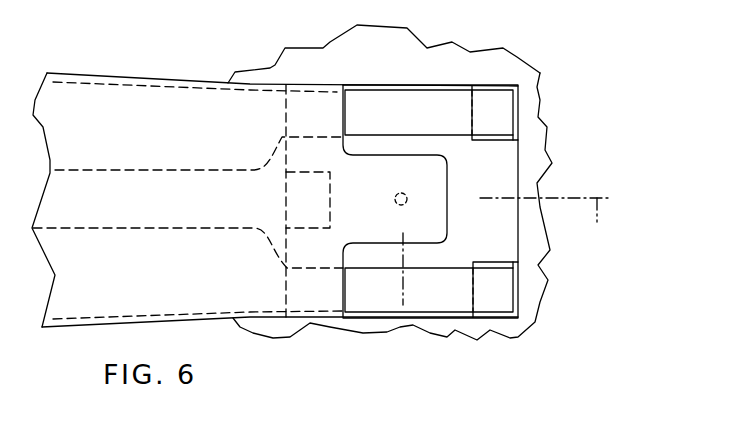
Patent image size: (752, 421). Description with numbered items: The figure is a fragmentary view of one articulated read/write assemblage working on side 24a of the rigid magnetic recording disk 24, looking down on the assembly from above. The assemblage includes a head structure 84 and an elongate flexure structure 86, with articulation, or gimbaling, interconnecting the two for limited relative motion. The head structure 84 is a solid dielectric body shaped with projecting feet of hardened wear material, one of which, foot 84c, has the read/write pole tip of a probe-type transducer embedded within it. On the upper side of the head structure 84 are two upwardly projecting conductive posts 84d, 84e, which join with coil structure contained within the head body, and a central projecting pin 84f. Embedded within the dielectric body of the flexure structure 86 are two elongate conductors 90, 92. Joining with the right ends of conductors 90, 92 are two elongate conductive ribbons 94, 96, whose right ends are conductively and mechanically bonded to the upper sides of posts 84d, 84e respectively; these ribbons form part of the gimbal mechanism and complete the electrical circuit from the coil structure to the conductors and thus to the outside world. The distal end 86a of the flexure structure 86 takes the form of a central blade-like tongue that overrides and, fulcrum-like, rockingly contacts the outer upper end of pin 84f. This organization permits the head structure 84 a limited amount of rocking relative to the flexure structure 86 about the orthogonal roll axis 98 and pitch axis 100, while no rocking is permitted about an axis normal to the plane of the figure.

The rigid magnetic recording disk 24 is at (539, 87).
The side of disk 24a is at (503, 70).
The head structure 84 is at (504, 188).
The foot 84c is at (334, 200).
The conductive post 84d is at (500, 143).
The conductive post 84e is at (502, 262).
The central projecting pin 84f is at (395, 203).
The elongate flexure structure 86 is at (127, 122).
The distal end of flexure structure 86a is at (427, 172).
The elongate conductor 90 is at (112, 170).
The elongate conductor 92 is at (133, 227).
The conductive ribbon 94 is at (392, 113).
The conductive ribbon 96 is at (418, 300).
The roll axis 98 is at (597, 222).
The pitch axis 100 is at (397, 296).